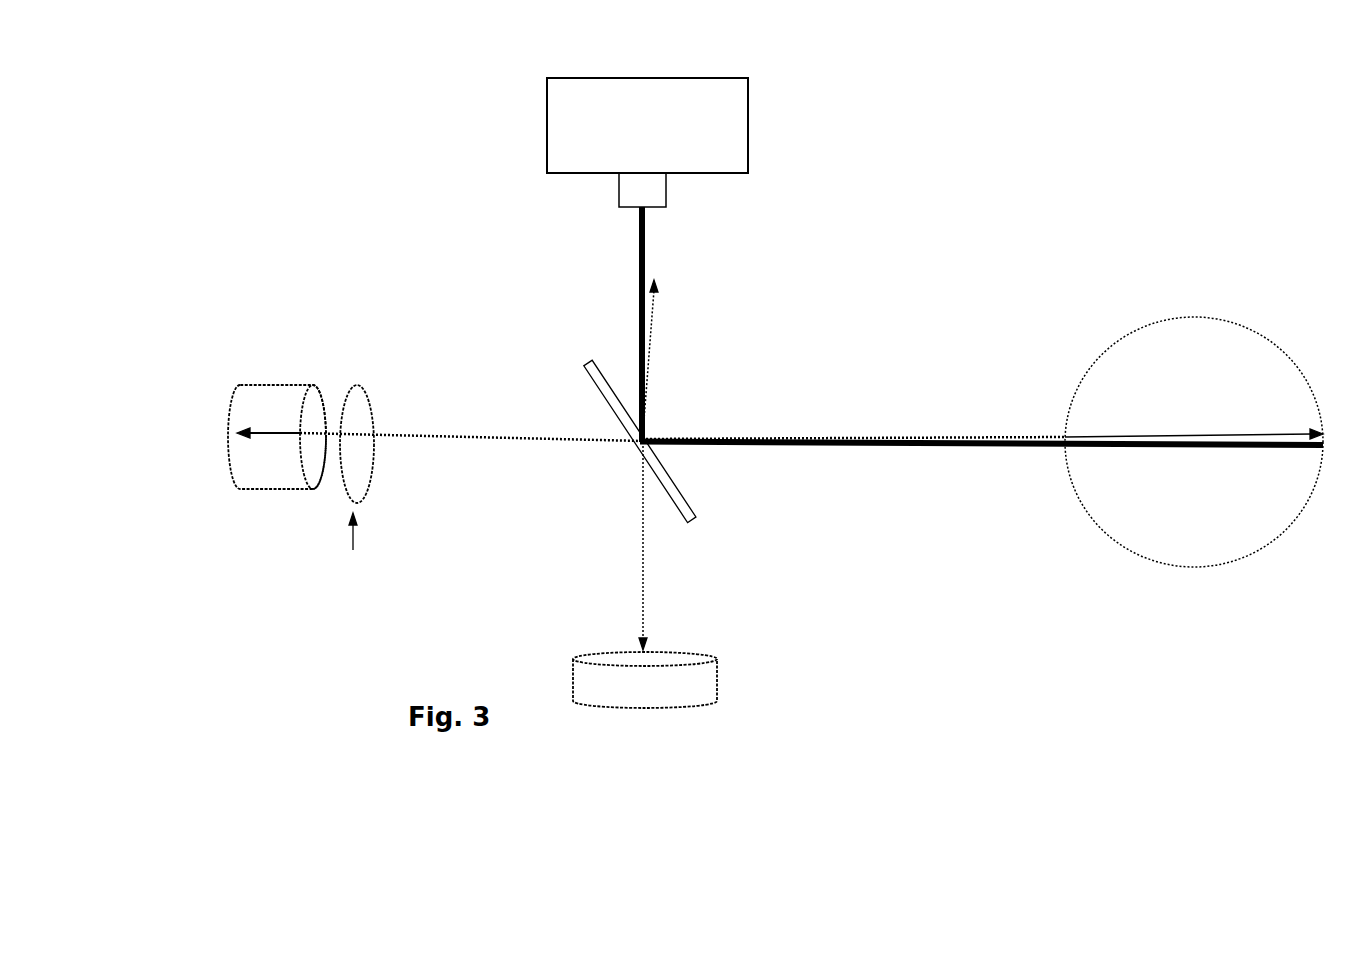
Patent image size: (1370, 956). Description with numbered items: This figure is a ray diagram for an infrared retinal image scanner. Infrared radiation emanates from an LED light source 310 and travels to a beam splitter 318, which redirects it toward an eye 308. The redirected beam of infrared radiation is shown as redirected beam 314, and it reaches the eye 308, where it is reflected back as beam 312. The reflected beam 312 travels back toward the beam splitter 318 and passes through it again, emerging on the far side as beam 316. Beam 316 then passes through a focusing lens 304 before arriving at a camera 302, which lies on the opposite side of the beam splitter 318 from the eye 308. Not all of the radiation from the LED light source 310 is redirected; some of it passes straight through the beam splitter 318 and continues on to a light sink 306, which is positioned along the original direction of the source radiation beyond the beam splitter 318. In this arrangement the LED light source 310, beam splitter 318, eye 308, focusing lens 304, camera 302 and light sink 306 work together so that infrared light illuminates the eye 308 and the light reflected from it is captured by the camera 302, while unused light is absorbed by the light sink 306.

The camera 302 is at (232, 473).
The focusing lens 304 is at (372, 481).
The light sink 306 is at (710, 708).
The eye 308 is at (1245, 553).
The LED light source 310 is at (749, 150).
The beam 312 is at (963, 450).
The redirected beam 314 is at (1040, 437).
The beam 316 is at (503, 437).
The beam splitter 318 is at (688, 500).